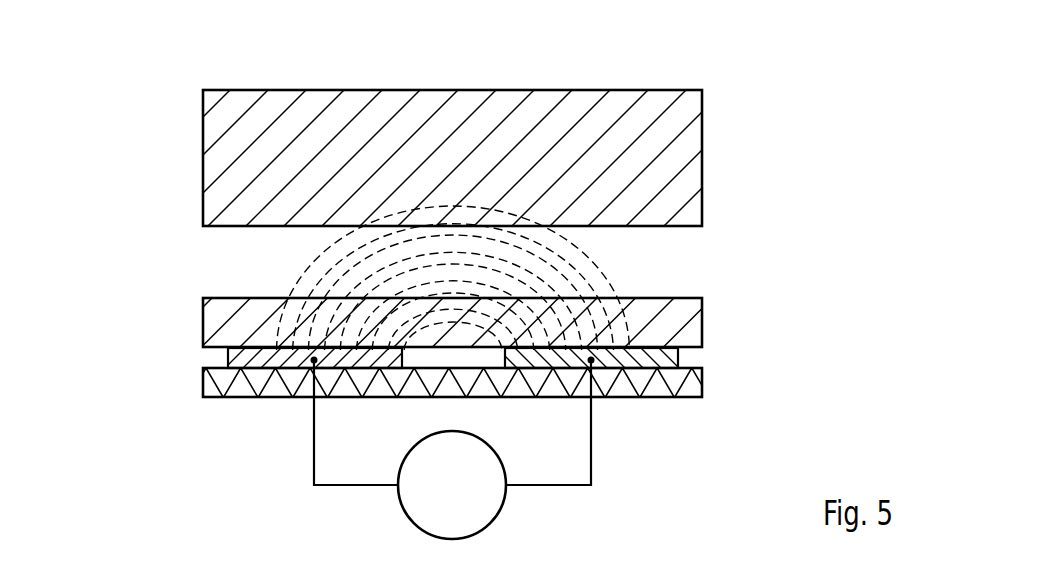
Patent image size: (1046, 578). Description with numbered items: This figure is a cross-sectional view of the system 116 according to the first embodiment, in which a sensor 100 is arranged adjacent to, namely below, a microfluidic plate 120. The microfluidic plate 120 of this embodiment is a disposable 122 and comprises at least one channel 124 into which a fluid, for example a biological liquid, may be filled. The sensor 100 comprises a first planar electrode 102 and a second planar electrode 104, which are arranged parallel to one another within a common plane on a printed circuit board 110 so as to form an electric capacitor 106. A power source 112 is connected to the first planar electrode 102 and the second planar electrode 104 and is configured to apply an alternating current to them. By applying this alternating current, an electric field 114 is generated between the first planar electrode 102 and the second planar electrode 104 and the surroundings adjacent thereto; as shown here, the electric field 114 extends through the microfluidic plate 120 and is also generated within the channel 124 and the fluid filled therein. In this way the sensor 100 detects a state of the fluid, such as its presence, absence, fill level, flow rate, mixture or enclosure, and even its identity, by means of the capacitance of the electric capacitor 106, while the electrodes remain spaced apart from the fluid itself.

The sensor 100 is at (457, 368).
The first planar electrode 102 is at (678, 356).
The second planar electrode 104 is at (230, 356).
The electric capacitor 106 is at (390, 353).
The printed circuit board 110 is at (213, 388).
The power source 112 is at (472, 501).
The electric field 114 is at (601, 273).
The system 116 is at (770, 158).
The microfluidic plate 120 is at (388, 322).
The disposable 122 is at (223, 322).
The channel 124 is at (269, 277).